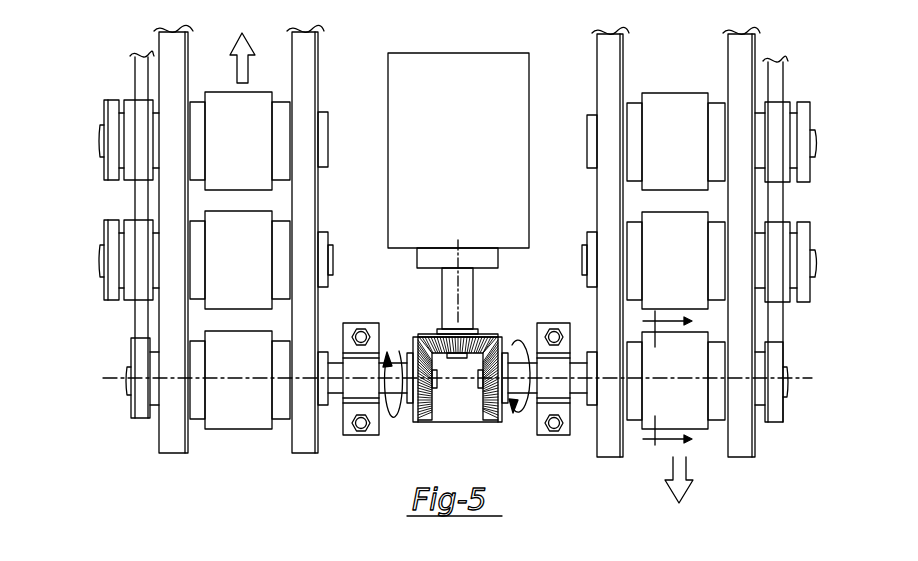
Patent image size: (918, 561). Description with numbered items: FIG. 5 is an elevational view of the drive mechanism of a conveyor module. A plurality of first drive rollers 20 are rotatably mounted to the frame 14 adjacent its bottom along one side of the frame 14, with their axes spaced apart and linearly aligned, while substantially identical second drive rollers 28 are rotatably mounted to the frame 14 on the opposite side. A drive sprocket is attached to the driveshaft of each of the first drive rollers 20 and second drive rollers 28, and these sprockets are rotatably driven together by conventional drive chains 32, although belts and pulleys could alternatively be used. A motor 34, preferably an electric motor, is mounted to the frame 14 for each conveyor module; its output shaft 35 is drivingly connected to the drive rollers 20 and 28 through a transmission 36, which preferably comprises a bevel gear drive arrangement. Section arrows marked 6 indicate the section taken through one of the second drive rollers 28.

The frame 14 is at (302, 63).
The first drive rollers 20 is at (217, 92).
The second drive rollers 28 is at (674, 108).
The drive chain 32 is at (113, 202).
The motor 34 is at (466, 153).
The output shaft 35 is at (446, 293).
The transmission 36 is at (453, 392).
The section line for FIG. 6 is at (676, 383).